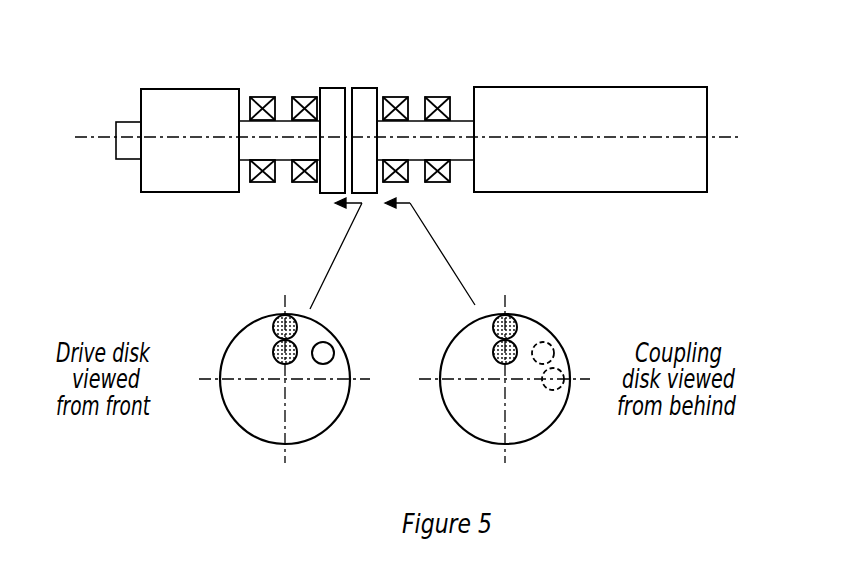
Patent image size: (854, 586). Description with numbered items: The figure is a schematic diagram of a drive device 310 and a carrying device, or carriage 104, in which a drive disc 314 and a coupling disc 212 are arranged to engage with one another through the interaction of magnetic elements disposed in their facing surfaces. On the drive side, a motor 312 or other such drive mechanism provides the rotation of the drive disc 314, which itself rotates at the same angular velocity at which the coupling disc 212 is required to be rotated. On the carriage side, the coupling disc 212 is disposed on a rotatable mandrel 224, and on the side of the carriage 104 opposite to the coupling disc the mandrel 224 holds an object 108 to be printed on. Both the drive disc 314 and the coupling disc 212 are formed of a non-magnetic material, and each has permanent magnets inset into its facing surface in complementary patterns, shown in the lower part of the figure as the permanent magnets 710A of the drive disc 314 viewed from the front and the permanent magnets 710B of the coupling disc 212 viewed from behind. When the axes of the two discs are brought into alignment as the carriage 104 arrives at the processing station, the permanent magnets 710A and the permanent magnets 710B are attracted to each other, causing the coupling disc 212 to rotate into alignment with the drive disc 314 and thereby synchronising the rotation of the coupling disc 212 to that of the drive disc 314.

The drive device 310 is at (243, 253).
The motor 312 is at (167, 93).
The drive disc 314 is at (332, 95).
The coupling disc 212 is at (367, 93).
The mandrel 224 is at (415, 118).
The object to be printed on 108 is at (616, 93).
The carriage 104 is at (529, 241).
The permanent magnets of the drive disc 710A is at (273, 352).
The permanent magnets of the coupling disc 710B is at (493, 352).